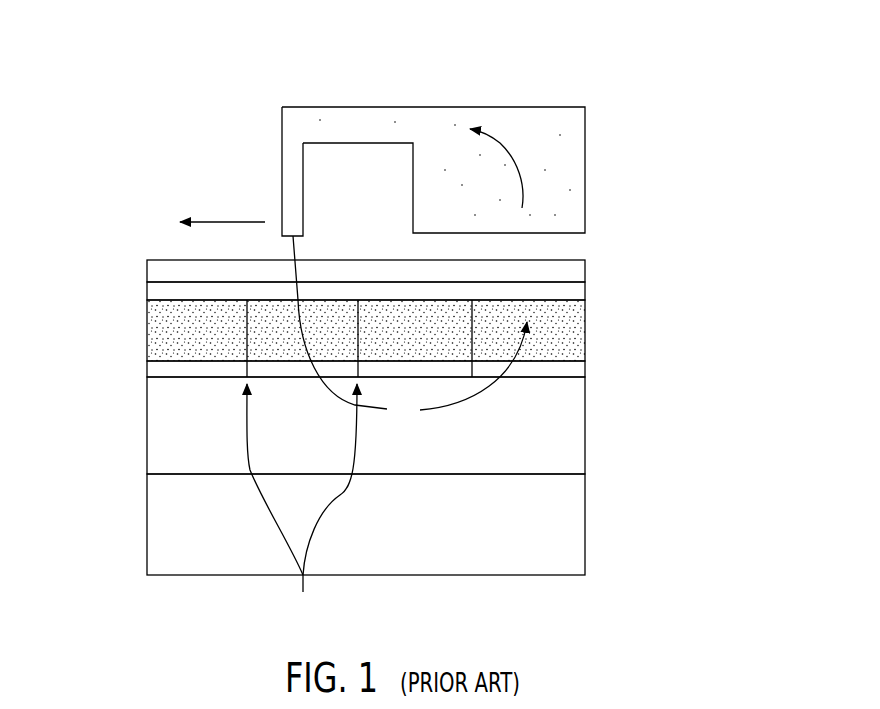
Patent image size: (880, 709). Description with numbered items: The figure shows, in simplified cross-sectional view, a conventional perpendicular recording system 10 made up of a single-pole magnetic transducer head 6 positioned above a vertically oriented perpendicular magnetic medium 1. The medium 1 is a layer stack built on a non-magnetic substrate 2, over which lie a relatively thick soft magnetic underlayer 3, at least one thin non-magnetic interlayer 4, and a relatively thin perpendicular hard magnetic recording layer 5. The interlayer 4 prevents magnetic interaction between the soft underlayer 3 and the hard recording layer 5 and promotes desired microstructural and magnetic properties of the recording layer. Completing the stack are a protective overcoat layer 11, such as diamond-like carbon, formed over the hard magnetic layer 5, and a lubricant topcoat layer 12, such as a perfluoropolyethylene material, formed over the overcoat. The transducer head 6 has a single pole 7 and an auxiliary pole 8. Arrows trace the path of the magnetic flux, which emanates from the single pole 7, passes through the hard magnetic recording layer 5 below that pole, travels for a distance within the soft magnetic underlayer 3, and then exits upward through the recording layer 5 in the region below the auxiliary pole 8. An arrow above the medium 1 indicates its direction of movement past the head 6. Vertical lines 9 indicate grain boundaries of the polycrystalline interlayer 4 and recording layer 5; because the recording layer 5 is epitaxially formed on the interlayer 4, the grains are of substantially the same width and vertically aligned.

The perpendicular magnetic medium 1 is at (437, 409).
The non-magnetic substrate 2 is at (592, 521).
The soft magnetic underlayer 3 is at (592, 424).
The non-magnetic interlayer 4 is at (592, 374).
The perpendicular hard magnetic recording layer 5 is at (592, 327).
The single-pole magnetic transducer head 6 is at (441, 144).
The single pole 7 is at (272, 165).
The auxiliary pole 8 is at (597, 158).
The grain boundaries 9 is at (387, 430).
The perpendicular recording system 10 is at (441, 130).
The protective overcoat layer 11 is at (592, 290).
The lubricant topcoat layer 12 is at (593, 269).